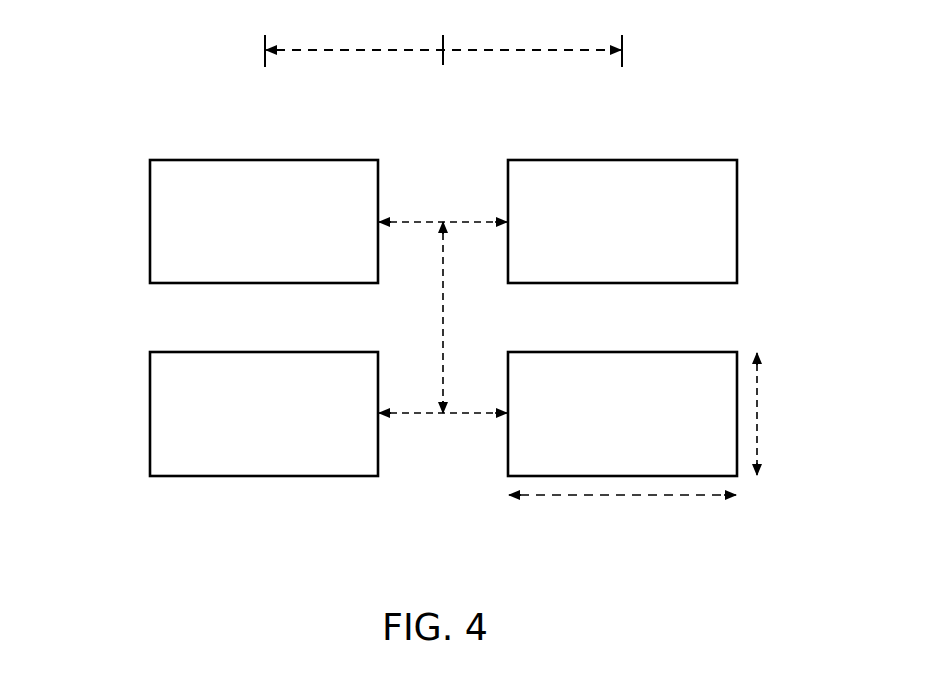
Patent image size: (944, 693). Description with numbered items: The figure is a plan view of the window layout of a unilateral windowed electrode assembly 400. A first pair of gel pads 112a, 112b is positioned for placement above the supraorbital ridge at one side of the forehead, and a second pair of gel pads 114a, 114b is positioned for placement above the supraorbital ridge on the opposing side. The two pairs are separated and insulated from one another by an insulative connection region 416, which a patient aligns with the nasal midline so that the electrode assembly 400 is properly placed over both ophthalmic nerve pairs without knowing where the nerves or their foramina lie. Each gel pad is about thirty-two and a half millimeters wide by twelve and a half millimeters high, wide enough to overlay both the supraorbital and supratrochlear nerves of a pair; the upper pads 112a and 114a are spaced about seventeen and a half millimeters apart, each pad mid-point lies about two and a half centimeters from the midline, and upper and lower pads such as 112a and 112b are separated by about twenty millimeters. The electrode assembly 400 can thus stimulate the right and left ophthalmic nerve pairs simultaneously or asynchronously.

The unilateral windowed electrode assembly 400 is at (86, 240).
The gel pad 112a is at (195, 158).
The gel pad 112b is at (203, 351).
The gel pad 114a is at (700, 158).
The gel pad 114b is at (692, 351).
The insulative connection region 416 is at (449, 175).